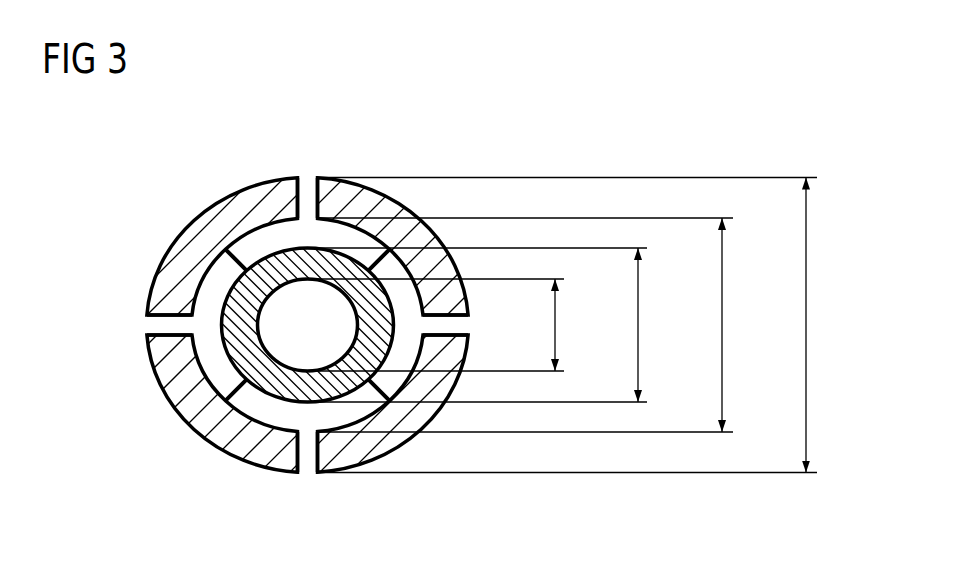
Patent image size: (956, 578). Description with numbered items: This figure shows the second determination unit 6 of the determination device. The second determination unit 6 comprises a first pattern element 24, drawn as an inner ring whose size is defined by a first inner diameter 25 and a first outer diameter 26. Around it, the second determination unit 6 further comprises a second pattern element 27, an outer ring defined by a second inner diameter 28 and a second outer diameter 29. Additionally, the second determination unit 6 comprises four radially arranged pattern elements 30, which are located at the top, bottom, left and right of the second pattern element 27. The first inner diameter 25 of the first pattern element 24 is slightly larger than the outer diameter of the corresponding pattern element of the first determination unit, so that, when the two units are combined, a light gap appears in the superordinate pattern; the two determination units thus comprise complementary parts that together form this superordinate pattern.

The second determination unit 6 is at (399, 142).
The first pattern element 24 is at (250, 292).
The first inner diameter 25 is at (555, 311).
The first outer diameter 26 is at (640, 338).
The second pattern element 27 is at (208, 220).
The second inner diameter 28 is at (722, 296).
The second outer diameter 29 is at (806, 326).
The radially arranged pattern elements 30 is at (308, 185).